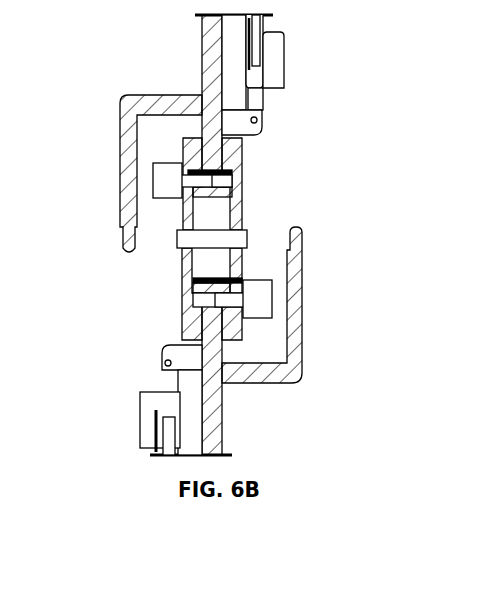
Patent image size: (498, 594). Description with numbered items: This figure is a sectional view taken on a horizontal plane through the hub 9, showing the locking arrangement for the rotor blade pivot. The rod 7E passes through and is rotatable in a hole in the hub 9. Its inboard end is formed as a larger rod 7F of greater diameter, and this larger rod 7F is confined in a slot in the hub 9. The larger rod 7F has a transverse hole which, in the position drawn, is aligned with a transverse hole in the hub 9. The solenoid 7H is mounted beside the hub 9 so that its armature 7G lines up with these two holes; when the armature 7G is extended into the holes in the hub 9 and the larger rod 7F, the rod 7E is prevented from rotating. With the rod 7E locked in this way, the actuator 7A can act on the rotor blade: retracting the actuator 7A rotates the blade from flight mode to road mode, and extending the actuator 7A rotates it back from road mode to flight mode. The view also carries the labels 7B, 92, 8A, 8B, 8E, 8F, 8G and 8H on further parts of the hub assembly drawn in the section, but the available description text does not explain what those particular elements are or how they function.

The rod 7E is at (200, 60).
The actuator 7A is at (283, 50).
The upper bracket with hole 7B is at (263, 117).
The armature 7G is at (183, 178).
The larger rod 7F is at (232, 182).
The solenoid 7H is at (153, 185).
The piston ring 92 is at (207, 229).
The hub 9 is at (182, 262).
The lower seal ring left portion 8F is at (193, 300).
The lower seal ring right portion 8G is at (247, 298).
The lower side block 8H is at (272, 298).
The lower bracket with hole 8B is at (160, 364).
The lower pin assembly 8A is at (140, 427).
The lower piston rod 8E is at (220, 412).